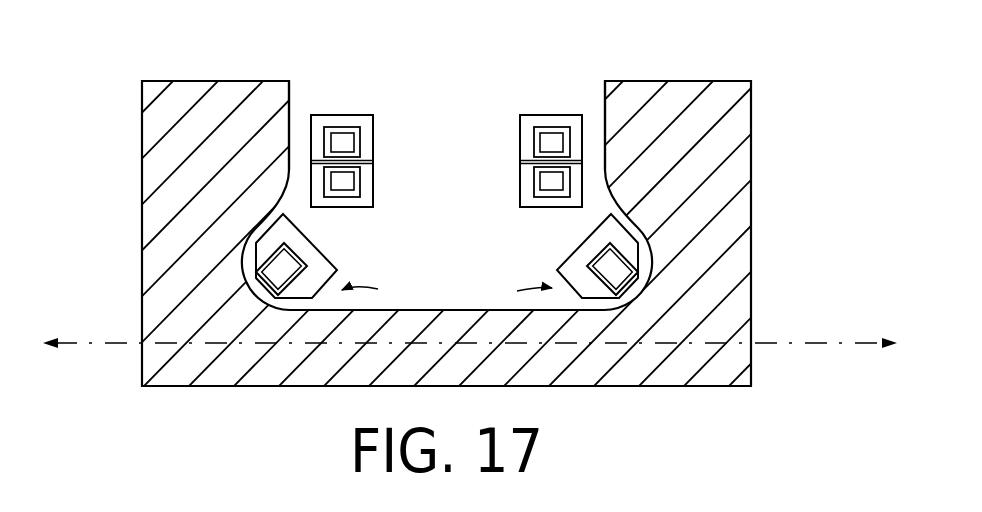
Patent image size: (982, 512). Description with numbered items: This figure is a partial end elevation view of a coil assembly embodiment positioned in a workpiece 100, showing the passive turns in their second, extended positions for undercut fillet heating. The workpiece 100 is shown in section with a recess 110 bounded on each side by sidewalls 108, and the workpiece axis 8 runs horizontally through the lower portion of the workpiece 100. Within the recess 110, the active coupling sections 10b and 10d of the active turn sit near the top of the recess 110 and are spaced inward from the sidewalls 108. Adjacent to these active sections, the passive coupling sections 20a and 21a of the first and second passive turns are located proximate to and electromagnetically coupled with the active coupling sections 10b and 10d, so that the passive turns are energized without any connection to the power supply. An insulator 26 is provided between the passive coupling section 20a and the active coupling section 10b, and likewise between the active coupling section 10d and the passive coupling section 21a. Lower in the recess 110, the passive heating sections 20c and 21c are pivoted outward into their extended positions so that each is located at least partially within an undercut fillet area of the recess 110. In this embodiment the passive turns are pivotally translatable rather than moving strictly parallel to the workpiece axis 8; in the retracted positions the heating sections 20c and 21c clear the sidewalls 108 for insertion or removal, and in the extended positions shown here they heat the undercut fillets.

The workpiece axis 8 is at (108, 343).
The workpiece 100 is at (142, 137).
The sidewalls 108 is at (289, 93).
The workpiece recess 110 is at (312, 76).
The active coupling section 10b is at (362, 135).
The active coupling section 10d is at (532, 135).
The insulator 26 is at (520, 162).
The passive coupling section 20a is at (348, 195).
The passive coupling section 21a is at (545, 195).
The passive heating section 20c is at (305, 267).
The passive heating section 21c is at (585, 265).